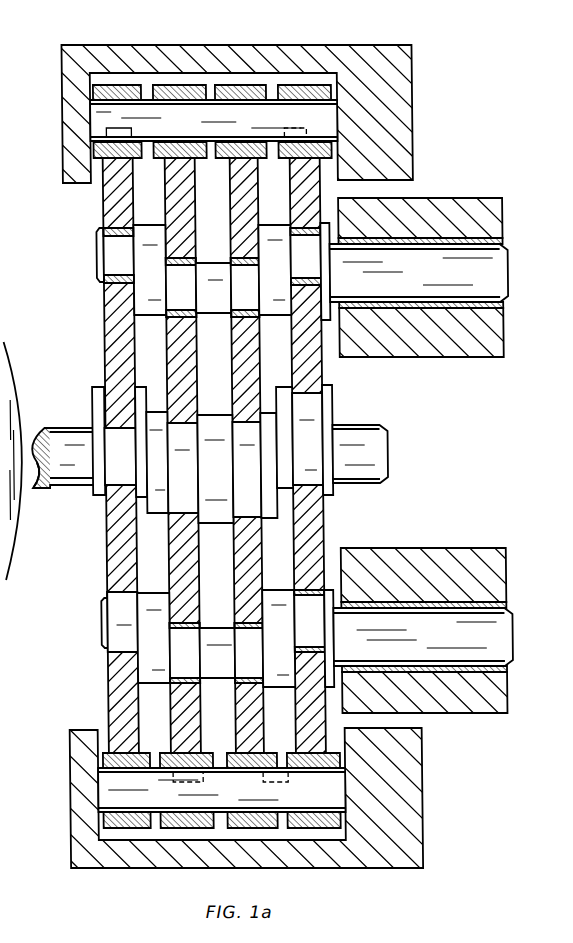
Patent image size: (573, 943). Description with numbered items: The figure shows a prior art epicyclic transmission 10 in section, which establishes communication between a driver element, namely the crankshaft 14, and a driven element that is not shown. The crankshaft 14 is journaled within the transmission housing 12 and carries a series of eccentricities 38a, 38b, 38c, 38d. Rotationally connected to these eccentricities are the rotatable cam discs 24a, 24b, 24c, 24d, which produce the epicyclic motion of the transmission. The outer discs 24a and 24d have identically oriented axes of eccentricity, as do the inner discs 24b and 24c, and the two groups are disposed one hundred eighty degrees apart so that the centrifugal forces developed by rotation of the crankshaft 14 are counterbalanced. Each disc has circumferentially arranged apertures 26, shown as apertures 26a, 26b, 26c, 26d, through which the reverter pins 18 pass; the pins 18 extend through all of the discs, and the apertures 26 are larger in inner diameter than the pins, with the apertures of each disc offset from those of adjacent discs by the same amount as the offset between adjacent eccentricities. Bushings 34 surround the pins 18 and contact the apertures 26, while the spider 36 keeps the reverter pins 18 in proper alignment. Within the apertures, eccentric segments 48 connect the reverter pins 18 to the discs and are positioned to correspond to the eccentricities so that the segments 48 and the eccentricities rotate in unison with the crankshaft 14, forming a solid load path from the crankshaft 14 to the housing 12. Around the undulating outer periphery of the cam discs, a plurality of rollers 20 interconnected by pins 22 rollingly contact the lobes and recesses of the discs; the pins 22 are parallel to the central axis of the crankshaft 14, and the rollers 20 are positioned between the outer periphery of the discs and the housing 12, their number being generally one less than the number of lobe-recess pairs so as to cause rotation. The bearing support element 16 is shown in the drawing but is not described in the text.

The transmission 10 is at (286, 471).
The transmission housing 12 is at (64, 136).
The crankshaft 14 is at (207, 450).
The bearing housing 16 is at (490, 209).
The reverter pins 18 is at (298, 458).
The rollers 20 is at (120, 88).
The pins 22 is at (36, 781).
The disc 24a is at (113, 328).
The disc 24b is at (173, 352).
The disc 24c is at (246, 353).
The disc 24d is at (292, 395).
The apertures 26 is at (183, 254).
The apertures 26a is at (100, 242).
The apertures 26b is at (165, 266).
The apertures 26c is at (234, 266).
The apertures 26d is at (296, 233).
The bushings 34 is at (105, 290).
The spider 36 is at (447, 553).
The eccentricity 38a is at (101, 397).
The eccentricity 38b is at (155, 441).
The eccentricity 38c is at (267, 503).
The eccentricity 38d is at (323, 485).
The eccentric segments 48 is at (210, 663).